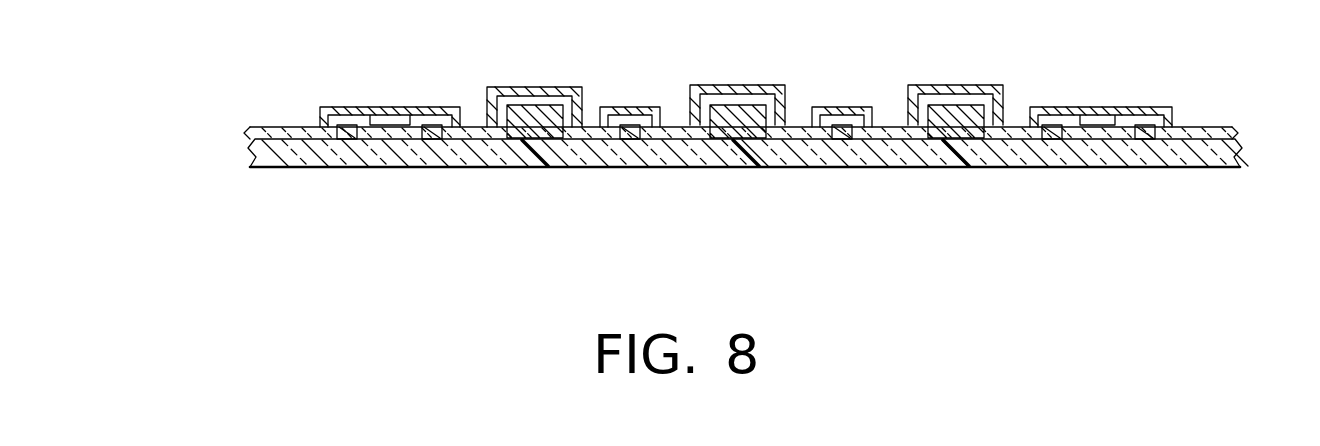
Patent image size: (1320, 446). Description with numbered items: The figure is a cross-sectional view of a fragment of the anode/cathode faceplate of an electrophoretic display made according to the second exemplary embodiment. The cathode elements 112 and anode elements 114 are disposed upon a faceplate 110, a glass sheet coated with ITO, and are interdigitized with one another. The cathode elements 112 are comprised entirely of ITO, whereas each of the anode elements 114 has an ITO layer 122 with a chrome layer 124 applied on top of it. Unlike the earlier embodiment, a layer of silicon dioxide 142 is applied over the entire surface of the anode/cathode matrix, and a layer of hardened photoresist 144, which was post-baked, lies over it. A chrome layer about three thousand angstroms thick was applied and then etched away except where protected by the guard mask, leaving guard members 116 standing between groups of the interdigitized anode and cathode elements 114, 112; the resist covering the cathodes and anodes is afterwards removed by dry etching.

The faceplate 110 is at (372, 150).
The cathode elements 112 is at (345, 142).
The anode elements 114 is at (528, 150).
The guard members 116 is at (395, 108).
The ITO layer 122 is at (578, 90).
The chrome layer 124 is at (515, 105).
The layer of silicon dioxide 142 is at (248, 138).
The layer of hardened photoresist 144 is at (248, 128).